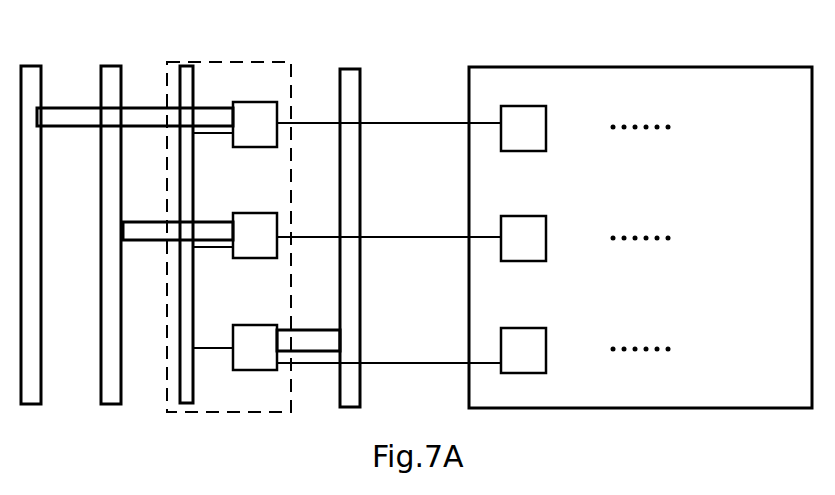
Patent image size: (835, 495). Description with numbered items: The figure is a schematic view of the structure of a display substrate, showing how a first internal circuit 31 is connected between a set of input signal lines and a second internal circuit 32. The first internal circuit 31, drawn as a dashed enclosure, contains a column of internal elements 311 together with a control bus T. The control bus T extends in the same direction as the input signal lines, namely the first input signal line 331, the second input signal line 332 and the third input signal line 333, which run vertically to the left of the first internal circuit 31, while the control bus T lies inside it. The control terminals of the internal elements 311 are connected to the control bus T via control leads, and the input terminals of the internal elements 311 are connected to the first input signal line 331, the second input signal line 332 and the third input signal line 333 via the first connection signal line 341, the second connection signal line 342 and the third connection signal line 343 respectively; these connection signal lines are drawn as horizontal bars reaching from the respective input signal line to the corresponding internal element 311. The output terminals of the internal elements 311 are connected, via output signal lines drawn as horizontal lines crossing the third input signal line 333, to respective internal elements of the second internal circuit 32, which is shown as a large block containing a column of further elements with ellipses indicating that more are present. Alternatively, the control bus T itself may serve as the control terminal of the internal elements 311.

The first input signal line 331 is at (30, 65).
The second input signal line 332 is at (107, 65).
The third input signal line 333 is at (352, 69).
The control bus T is at (184, 63).
The first internal circuit 31 is at (249, 66).
The internal element 311 is at (235, 236).
The first connection signal line 341 is at (50, 107).
The second connection signal line 342 is at (173, 220).
The third connection signal line 343 is at (323, 328).
The second internal circuit 32 is at (640, 67).